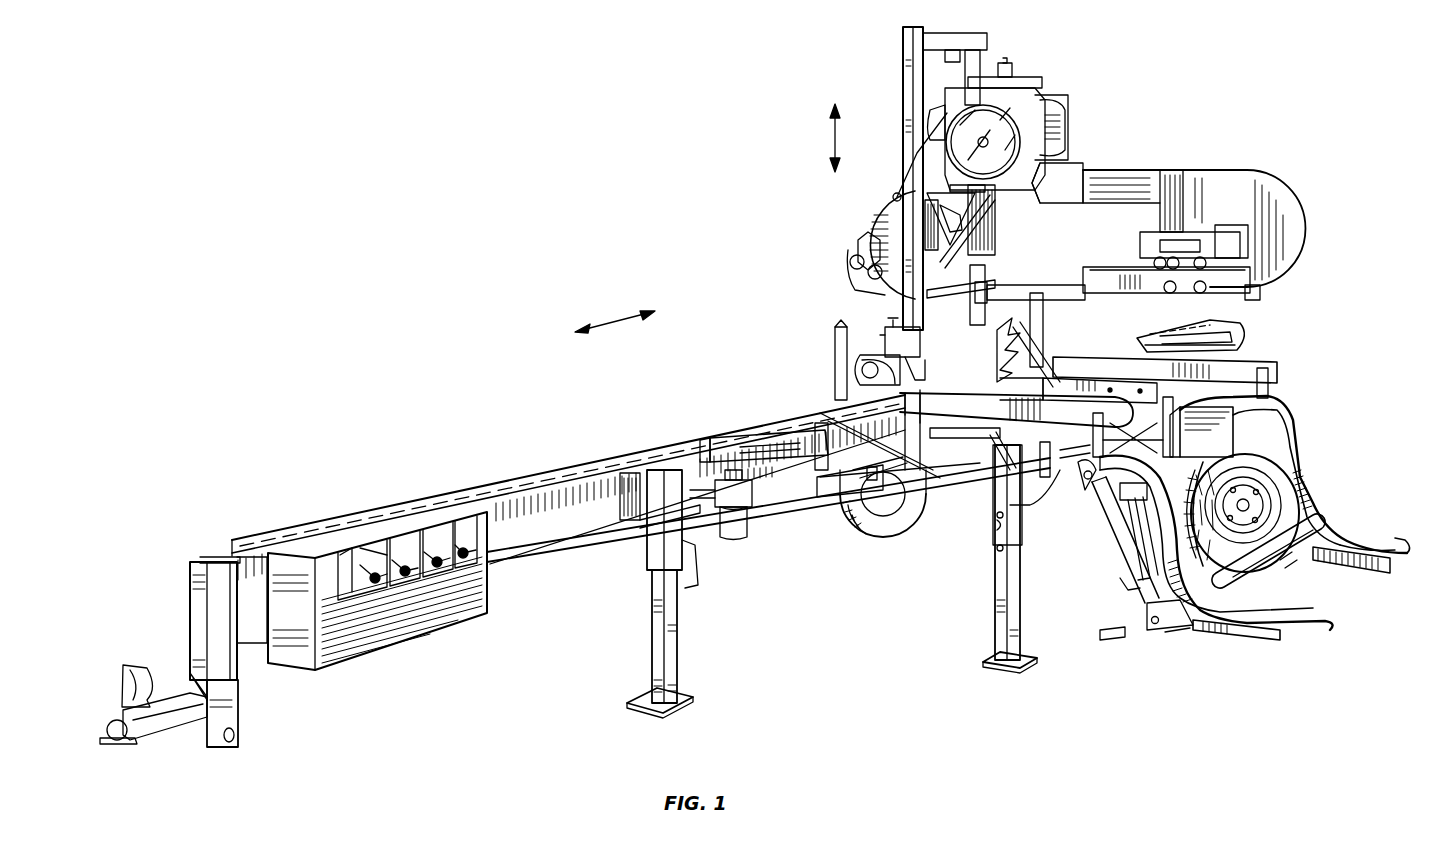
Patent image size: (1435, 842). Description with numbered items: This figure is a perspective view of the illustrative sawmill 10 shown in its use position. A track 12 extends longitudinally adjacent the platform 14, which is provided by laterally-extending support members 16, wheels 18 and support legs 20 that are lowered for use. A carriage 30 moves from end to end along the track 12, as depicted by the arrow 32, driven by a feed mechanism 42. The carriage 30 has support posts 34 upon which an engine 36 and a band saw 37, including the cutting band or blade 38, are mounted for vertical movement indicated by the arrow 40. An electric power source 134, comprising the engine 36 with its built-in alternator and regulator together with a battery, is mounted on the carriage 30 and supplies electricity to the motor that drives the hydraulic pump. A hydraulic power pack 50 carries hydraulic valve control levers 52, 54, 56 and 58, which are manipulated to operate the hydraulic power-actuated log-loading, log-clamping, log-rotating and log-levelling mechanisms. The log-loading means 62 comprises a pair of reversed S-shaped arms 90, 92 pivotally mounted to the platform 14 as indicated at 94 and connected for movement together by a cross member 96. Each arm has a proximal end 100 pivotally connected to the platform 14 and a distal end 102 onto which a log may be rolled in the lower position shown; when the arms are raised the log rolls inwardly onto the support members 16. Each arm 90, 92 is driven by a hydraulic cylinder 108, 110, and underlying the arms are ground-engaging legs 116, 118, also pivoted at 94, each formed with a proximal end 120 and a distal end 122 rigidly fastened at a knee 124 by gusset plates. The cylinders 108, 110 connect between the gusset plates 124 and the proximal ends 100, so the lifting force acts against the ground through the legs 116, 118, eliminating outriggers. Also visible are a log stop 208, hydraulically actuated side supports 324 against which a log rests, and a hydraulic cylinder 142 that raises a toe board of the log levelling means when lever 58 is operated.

The sawmill 10 is at (1270, 320).
The track 12 is at (547, 455).
The platform 14 is at (1258, 357).
The support members 16 is at (780, 430).
The wheels 18 is at (885, 535).
The support legs 20 is at (675, 590).
The carriage 30 is at (1120, 132).
The arrow 32 is at (618, 315).
The support posts 34 is at (895, 80).
The engine 36 is at (1040, 90).
The band saw 37 is at (1245, 172).
The cutting band or blade 38 is at (1033, 283).
The arrow 40 is at (828, 135).
The feed mechanism 42 is at (850, 325).
The hydraulic power pack 50 is at (381, 558).
The hydraulic valve control lever 52 is at (375, 572).
The hydraulic valve control lever 54 is at (405, 565).
The hydraulic valve control lever 56 is at (437, 556).
The hydraulic valve control lever 58 is at (463, 547).
The log-loading means 62 is at (1333, 515).
The arm 90 is at (1292, 440).
The arm 92 is at (1168, 560).
The pivot 94 is at (1080, 490).
The cross member 96 is at (1283, 568).
The proximal end 100 is at (1122, 488).
The distal end 102 is at (1400, 550).
The hydraulic cylinder 108 is at (1312, 492).
The hydraulic cylinder 110 is at (1150, 612).
The ground-engaging leg 116 is at (1330, 560).
The ground-engaging leg 118 is at (1164, 647).
The proximal end 120 is at (1138, 560).
The distal end 122 is at (1262, 636).
The knee 124 is at (1175, 630).
The electric power source 134 is at (1014, 66).
The hydraulic cylinder 142 is at (747, 530).
The log stop 208 is at (1005, 325).
The side supports 324 is at (1046, 305).